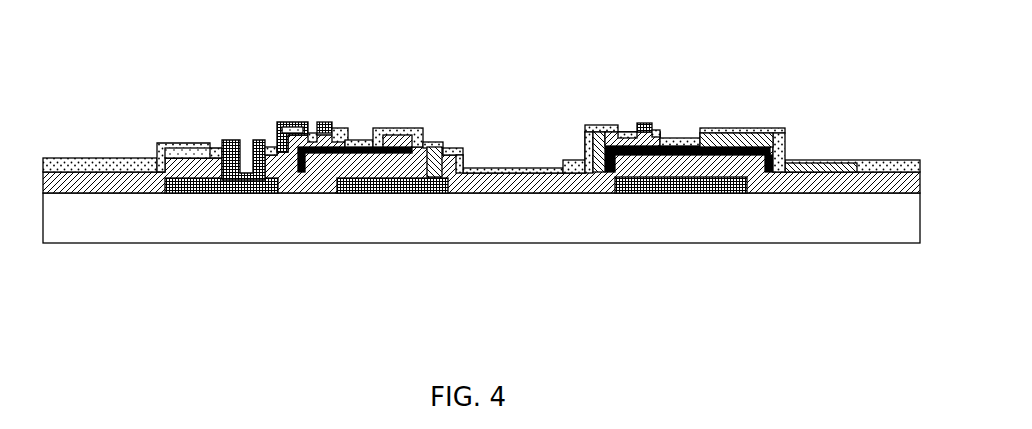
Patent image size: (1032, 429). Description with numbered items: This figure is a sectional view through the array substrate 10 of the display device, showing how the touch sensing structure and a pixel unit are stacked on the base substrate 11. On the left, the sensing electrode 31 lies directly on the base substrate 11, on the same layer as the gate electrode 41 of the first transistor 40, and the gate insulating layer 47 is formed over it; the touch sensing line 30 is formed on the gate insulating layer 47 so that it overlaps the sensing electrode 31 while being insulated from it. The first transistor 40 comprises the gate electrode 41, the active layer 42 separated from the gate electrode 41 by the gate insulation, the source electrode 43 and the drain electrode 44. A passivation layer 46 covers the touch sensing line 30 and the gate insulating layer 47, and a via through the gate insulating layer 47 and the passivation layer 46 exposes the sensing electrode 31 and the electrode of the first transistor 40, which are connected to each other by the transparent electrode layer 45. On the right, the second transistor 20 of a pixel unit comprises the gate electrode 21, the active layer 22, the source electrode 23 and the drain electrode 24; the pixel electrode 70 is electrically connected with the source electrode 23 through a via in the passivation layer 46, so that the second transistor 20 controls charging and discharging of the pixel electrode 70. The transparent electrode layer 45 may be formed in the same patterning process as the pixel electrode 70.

The array substrate 10 is at (817, 278).
The base substrate 11 is at (552, 230).
The second transistor 20 is at (755, 112).
The gate electrode 21 is at (700, 190).
The active layer 22 is at (675, 142).
The source electrode 23 is at (592, 125).
The drain electrode 24 is at (767, 138).
The touch sensing line 30 is at (185, 152).
The sensing electrode 31 is at (212, 188).
The first transistor 40 is at (381, 78).
The gate electrode 41 is at (407, 185).
The active layer 42 is at (317, 160).
The source electrode 43 is at (335, 125).
The drain electrode 44 is at (413, 128).
The transparent electrode layer 45 is at (259, 150).
The passivation layer 46 is at (382, 128).
The gate insulating layer 47 is at (60, 172).
The pixel electrode 70 is at (570, 160).